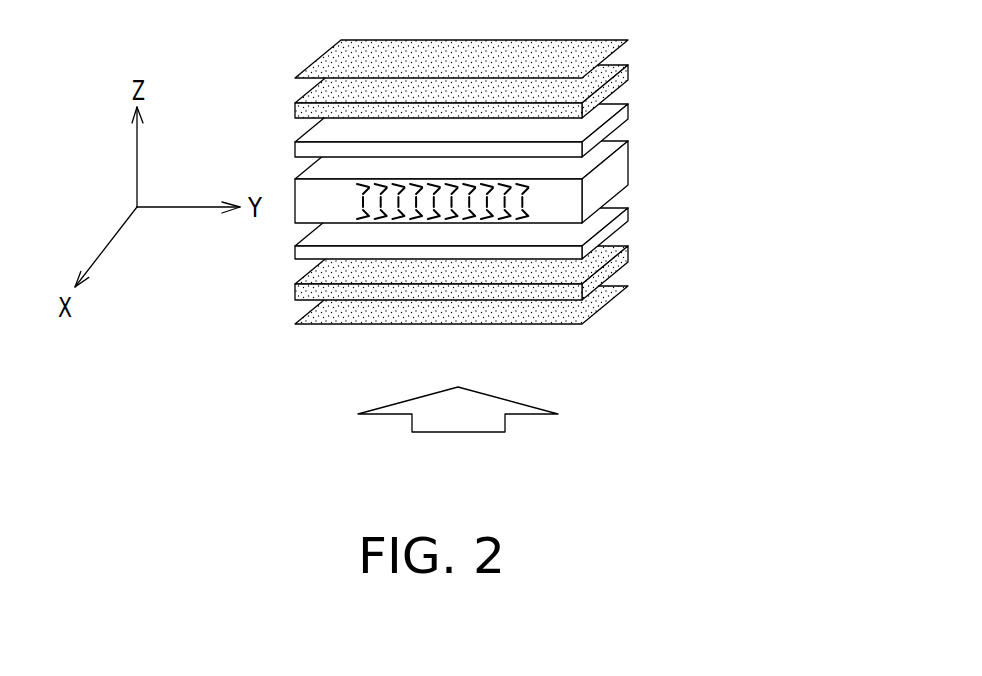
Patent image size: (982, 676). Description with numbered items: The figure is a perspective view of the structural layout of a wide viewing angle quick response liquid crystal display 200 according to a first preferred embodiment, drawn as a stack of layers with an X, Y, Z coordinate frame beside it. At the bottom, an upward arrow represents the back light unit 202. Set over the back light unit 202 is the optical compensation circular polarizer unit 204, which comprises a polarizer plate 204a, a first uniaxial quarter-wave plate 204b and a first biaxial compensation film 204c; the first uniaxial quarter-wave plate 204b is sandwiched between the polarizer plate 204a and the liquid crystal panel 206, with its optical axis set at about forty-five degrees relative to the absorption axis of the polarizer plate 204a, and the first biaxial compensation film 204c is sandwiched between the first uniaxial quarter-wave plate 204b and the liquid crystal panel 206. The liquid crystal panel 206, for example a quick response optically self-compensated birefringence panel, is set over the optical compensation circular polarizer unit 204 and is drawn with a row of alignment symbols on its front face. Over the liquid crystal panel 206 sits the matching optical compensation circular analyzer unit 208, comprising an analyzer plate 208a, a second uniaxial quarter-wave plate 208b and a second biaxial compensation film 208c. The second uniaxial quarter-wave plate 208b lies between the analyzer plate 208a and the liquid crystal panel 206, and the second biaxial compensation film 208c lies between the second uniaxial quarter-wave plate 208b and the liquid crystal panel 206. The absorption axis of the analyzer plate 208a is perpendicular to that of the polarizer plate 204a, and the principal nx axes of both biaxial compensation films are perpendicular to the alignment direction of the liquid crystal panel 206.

The wide viewing angle quick response liquid crystal display 200 is at (579, 244).
The back light unit 202 is at (500, 422).
The optical compensation circular polarizer unit 204 is at (579, 278).
The polarizer plate 204a is at (598, 312).
The first uniaxial quarter-wave plate 204b is at (627, 253).
The first biaxial compensation film 204c is at (627, 215).
The liquid crystal panel 206 is at (620, 175).
The optical compensation circular analyzer unit 208 is at (579, 86).
The analyzer plate 208a is at (598, 44).
The second uniaxial quarter-wave plate 208b is at (627, 72).
The second biaxial compensation film 208c is at (627, 110).